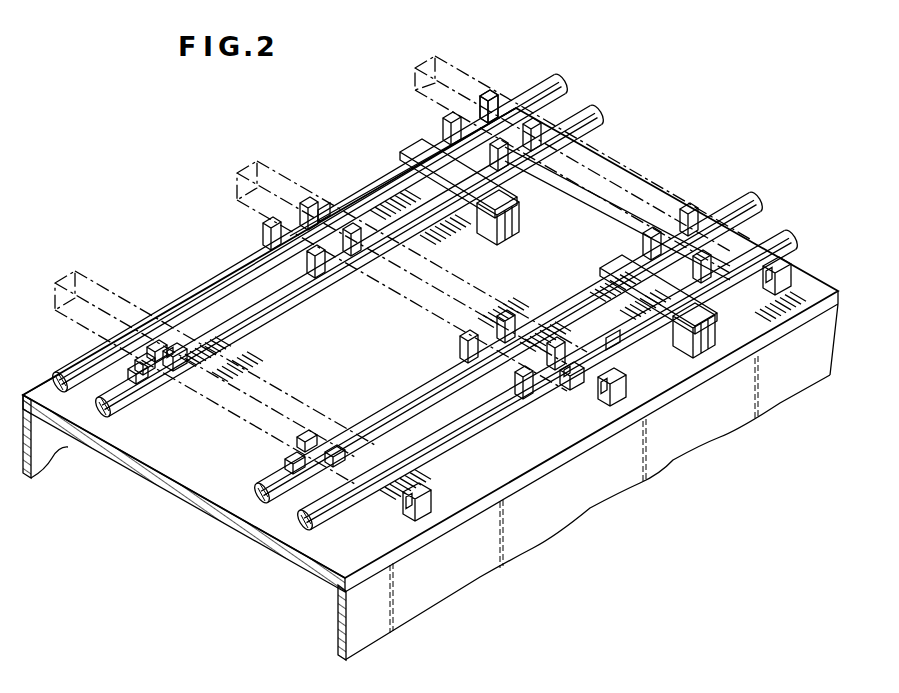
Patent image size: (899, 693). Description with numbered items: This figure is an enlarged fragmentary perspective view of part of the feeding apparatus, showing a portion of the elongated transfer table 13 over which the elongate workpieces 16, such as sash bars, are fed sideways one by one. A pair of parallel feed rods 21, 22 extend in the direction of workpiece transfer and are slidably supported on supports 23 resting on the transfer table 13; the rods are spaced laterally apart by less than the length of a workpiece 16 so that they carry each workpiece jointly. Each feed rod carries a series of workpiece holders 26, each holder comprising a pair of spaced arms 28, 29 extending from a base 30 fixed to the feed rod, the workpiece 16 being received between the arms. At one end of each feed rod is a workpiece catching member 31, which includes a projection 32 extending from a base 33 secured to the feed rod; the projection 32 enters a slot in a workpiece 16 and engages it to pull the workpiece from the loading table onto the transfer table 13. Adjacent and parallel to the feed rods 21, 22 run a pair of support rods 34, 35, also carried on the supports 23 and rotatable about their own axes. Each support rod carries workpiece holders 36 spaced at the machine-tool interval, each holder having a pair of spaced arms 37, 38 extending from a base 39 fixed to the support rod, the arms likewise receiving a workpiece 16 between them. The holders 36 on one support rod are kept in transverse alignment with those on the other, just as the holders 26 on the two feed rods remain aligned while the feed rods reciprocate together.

The transfer table 13 is at (515, 462).
The workpiece 16 is at (450, 60).
The feed rod 21 is at (258, 332).
The feed rod 22 is at (356, 420).
The support 23 is at (420, 142).
The workpiece holder 26 is at (515, 165).
The arm 28 is at (316, 276).
The arm 29 is at (356, 215).
The base 30 is at (357, 262).
The workpiece catching member 31 is at (156, 345).
The projection 32 is at (130, 362).
The base 33 is at (150, 378).
The support rod 34 is at (210, 285).
The support rod 35 is at (455, 440).
The workpiece holder 36 is at (490, 95).
The arm 37 is at (263, 230).
The arm 38 is at (316, 205).
The base 39 is at (256, 224).